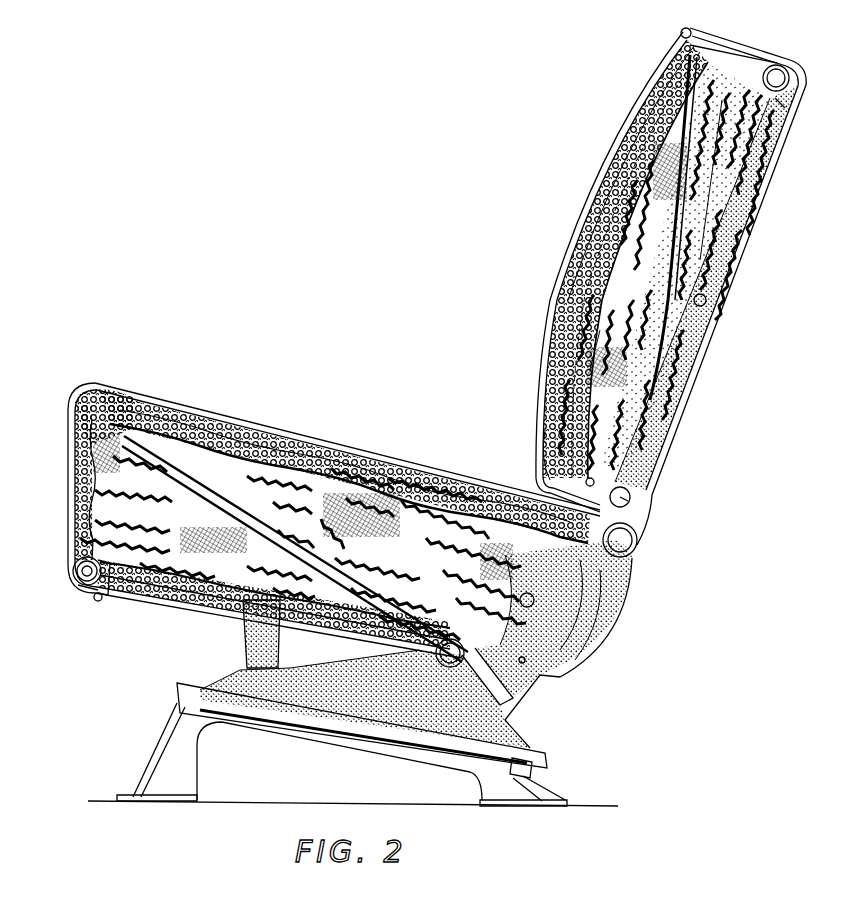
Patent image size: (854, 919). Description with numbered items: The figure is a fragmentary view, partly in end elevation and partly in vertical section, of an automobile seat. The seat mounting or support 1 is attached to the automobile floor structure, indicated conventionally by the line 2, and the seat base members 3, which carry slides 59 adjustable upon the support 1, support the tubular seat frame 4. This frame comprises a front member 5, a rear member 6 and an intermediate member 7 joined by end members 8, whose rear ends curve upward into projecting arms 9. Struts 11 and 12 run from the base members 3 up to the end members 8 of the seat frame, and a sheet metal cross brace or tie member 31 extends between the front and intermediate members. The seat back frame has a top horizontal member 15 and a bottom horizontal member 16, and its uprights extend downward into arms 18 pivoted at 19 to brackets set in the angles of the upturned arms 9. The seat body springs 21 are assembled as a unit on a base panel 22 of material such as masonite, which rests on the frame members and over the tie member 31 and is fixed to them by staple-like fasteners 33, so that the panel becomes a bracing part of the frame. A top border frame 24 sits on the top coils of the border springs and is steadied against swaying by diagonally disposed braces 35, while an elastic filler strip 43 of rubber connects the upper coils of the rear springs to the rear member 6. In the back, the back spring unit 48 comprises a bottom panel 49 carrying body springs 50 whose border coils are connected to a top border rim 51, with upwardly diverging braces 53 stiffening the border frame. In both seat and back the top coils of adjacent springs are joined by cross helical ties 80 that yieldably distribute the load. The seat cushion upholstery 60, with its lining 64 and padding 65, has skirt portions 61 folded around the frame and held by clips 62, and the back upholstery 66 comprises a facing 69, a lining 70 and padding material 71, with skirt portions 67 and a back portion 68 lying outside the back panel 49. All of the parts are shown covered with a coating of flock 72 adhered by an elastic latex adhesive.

The seat mounting or support 1 is at (327, 723).
The automobile floor structure line 2 is at (588, 805).
The seat base members 3 is at (507, 725).
The seat frame 4 is at (77, 588).
The front member 5 is at (72, 567).
The rear member 6 is at (638, 545).
The intermediate member 7 is at (505, 684).
The end members 8 is at (170, 600).
The upwardly projecting arms 9 is at (607, 617).
The strut 11 is at (247, 640).
The strut 12 is at (500, 697).
The top horizontal member 15 is at (778, 65).
The bottom horizontal member 16 is at (643, 487).
The arms 18 is at (617, 576).
The pivot 19 is at (595, 635).
The body springs 21 is at (277, 487).
The base panel 22 is at (143, 597).
The top border frame 24 is at (80, 393).
The cross brace or tie member 31 is at (190, 620).
The staple-like fasteners 33 is at (796, 108).
The diagonally disposed braces 35 is at (295, 549).
The elastic filler strip 43 is at (520, 503).
The back spring unit 48 is at (710, 311).
The bottom panel 49 is at (717, 270).
The body springs 50 is at (583, 340).
The top border rim 51 is at (530, 457).
The upwardly diverging braces 53 is at (677, 160).
The slides 59 is at (533, 760).
The seat cushion upholstery 60 is at (240, 415).
The skirt portions 61 is at (67, 500).
The clips 62 is at (98, 597).
The lining 64 is at (70, 520).
The padding 65 is at (270, 447).
The back upholstery 66 is at (560, 241).
The skirt portions 67 is at (707, 50).
The back portion 68 is at (697, 363).
The facing 69 is at (556, 290).
The lining 70 is at (587, 194).
The padding material 71 is at (583, 223).
The flock coating 72 is at (653, 387).
The cross helical ties 80 is at (596, 260).